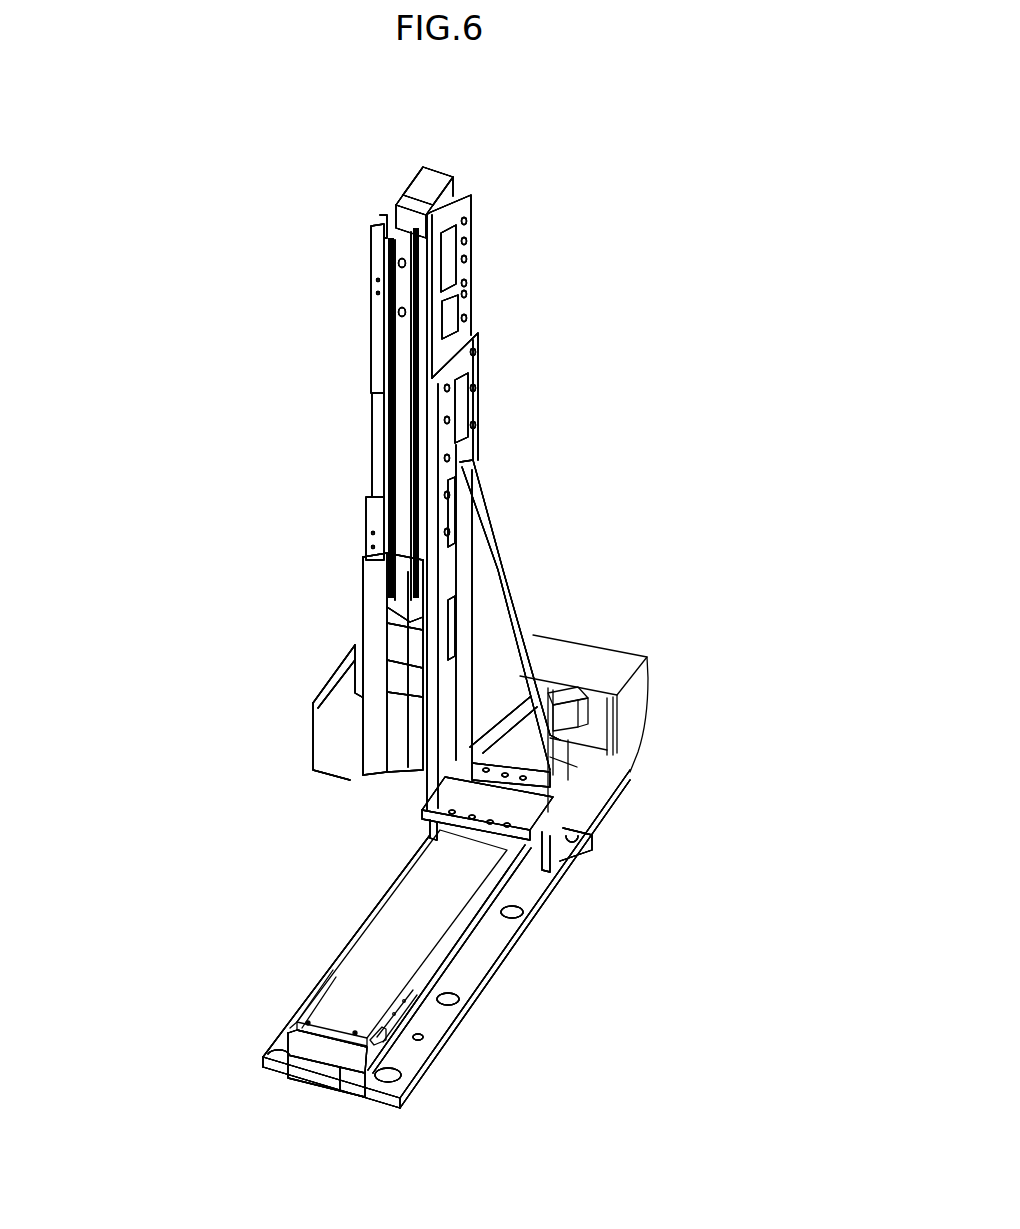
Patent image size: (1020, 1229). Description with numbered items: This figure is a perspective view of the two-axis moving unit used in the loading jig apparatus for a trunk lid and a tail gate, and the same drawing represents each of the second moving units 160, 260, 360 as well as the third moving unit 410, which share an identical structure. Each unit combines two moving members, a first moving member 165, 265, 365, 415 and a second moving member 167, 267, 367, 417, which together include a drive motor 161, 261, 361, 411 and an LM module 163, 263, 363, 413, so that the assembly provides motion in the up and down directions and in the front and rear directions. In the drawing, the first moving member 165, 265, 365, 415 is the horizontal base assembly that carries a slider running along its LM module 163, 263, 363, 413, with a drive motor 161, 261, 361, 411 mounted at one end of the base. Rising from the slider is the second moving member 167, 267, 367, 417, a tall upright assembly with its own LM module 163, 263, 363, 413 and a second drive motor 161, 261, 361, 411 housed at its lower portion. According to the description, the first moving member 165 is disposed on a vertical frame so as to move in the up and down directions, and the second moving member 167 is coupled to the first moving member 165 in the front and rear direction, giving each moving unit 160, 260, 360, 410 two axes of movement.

The second moving unit 160 is at (561, 127).
The second moving unit 260 is at (446, 902).
The second moving unit 360 is at (446, 902).
The third moving unit 410 is at (446, 902).
The drive motor 161 is at (405, 680).
The drive motor 261 is at (368, 666).
The drive motor 361 is at (368, 666).
The drive motor 411 is at (368, 666).
The LM module 163 is at (377, 410).
The LM module 263 is at (376, 387).
The LM module 363 is at (376, 387).
The LM module 413 is at (376, 387).
The first moving member 165 is at (393, 870).
The first moving member 265 is at (327, 1063).
The first moving member 365 is at (327, 1063).
The first moving member 415 is at (327, 1063).
The second moving member 167 is at (365, 465).
The second moving member 267 is at (474, 488).
The second moving member 367 is at (474, 488).
The second moving member 417 is at (474, 488).